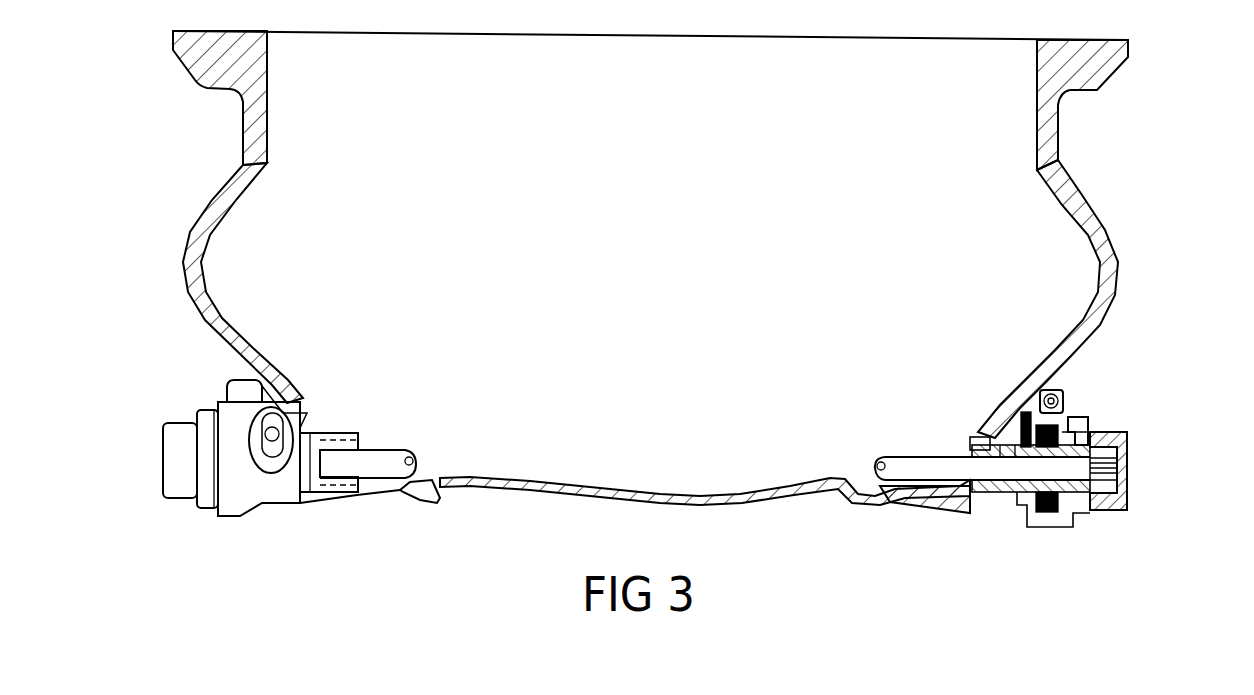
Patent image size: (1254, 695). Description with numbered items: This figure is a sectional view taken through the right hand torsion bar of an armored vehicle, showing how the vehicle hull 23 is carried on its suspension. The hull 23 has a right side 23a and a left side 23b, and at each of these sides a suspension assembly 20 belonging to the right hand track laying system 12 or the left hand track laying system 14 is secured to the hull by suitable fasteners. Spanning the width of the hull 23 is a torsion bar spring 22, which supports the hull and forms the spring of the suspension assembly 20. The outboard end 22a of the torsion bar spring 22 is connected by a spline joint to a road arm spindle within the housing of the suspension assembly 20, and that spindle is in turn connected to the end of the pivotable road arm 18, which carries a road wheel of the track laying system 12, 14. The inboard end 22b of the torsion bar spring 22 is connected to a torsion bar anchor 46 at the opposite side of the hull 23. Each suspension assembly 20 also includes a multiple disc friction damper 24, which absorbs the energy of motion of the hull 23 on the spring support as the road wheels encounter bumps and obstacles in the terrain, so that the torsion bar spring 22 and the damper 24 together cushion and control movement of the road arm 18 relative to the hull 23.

The right hand track laying system 12 is at (232, 530).
The left hand track laying system 14 is at (1140, 487).
The road arm 18 is at (1112, 432).
The suspension assembly 20 is at (1075, 420).
The torsion bar spring 22 is at (912, 465).
The outboard end 22a is at (1120, 467).
The inboard end 22b is at (343, 460).
The vehicle hull 23 is at (778, 506).
The right side 23a is at (1050, 158).
The left side 23b is at (240, 172).
The multiple disc friction damper 24 is at (1087, 403).
The torsion bar anchor 46 is at (333, 440).